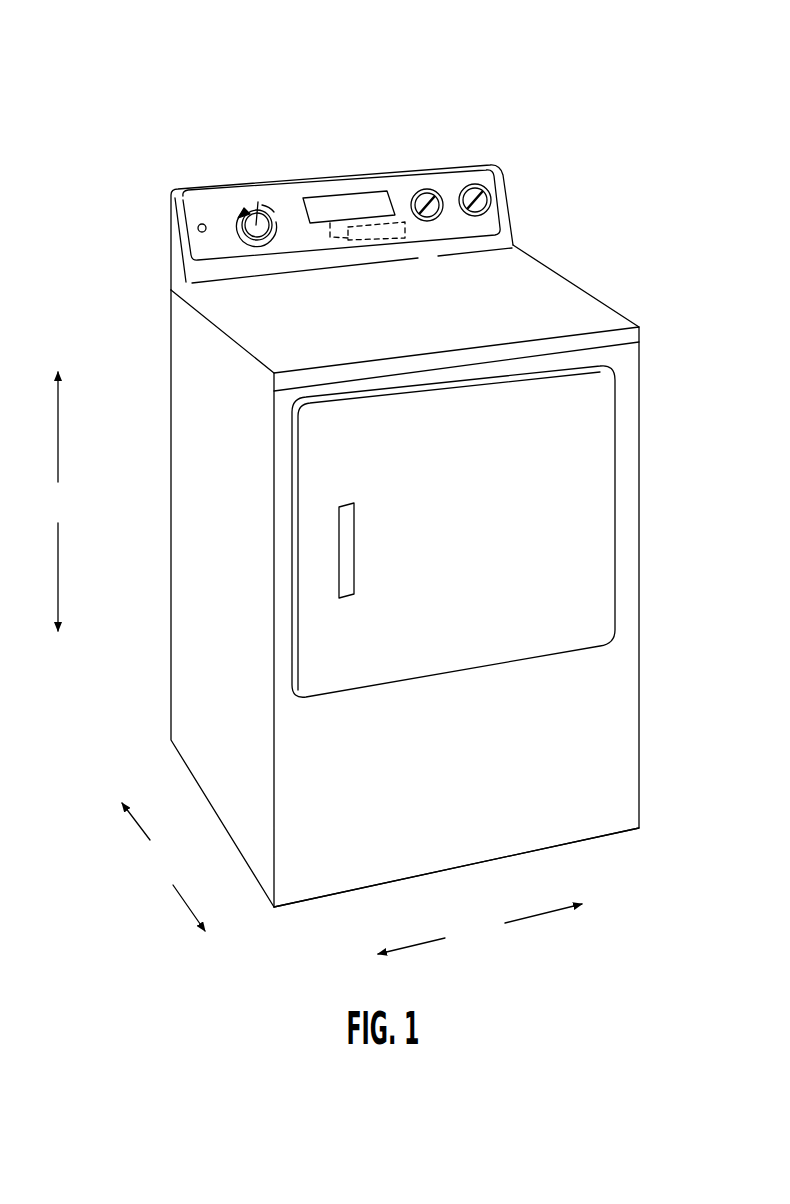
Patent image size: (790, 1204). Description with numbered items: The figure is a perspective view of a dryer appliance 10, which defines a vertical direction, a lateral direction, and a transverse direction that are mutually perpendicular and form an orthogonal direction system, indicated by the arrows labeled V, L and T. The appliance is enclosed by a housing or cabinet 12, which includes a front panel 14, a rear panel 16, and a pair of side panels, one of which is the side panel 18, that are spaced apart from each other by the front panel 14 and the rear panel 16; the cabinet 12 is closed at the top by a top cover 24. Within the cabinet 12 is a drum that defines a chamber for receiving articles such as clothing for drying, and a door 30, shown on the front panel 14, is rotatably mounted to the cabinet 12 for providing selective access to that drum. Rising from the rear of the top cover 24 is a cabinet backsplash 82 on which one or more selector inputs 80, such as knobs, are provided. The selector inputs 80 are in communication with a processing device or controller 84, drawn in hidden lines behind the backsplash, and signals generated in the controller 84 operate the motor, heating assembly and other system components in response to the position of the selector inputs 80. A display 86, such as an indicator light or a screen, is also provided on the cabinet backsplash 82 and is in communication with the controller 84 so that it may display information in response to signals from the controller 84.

The dryer appliance 10 is at (188, 98).
The cabinet 12 is at (641, 713).
The front panel 14 is at (597, 812).
The rear panel 16 is at (163, 380).
The side panel 18 is at (190, 518).
The top cover 24 is at (540, 294).
The door 30 is at (590, 507).
The selector inputs 80 is at (238, 207).
The cabinet backsplash 82 is at (200, 203).
The controller 84 is at (375, 218).
The display 86 is at (337, 205).